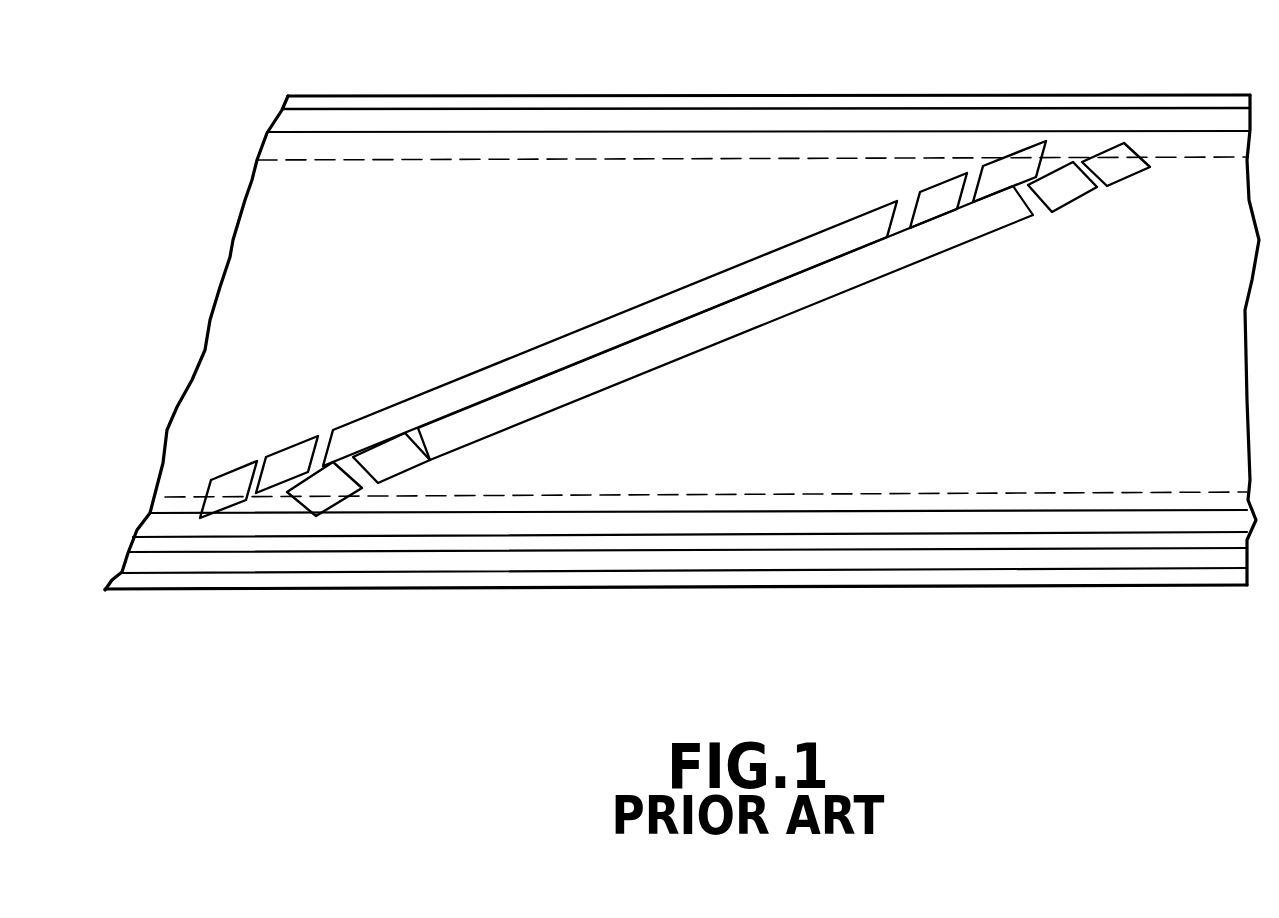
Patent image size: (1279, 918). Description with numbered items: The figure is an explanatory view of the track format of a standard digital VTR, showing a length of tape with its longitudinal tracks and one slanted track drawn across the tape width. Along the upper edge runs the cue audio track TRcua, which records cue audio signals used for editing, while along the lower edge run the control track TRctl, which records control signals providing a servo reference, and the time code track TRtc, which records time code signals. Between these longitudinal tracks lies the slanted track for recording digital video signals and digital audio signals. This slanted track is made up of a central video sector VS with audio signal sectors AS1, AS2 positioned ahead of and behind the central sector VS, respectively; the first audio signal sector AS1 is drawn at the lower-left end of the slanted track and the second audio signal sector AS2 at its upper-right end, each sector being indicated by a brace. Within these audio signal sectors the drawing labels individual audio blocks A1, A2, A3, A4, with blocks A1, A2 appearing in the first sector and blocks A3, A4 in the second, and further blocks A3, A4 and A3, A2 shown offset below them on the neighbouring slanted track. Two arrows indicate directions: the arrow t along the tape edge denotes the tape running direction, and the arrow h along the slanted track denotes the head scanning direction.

The audio sector A1 is at (228, 489).
The audio sector A2 is at (703, 318).
The audio sector A3 is at (692, 339).
The audio sector A4 is at (699, 312).
The video sector VS is at (695, 300).
The audio signal sector AS1 is at (324, 423).
The audio signal sector AS2 is at (898, 196).
The cue audio track TRcua is at (1107, 118).
The time code track TRtc is at (848, 563).
The control track TRctl is at (995, 518).
The tape running direction t is at (777, 58).
The head scanning direction h is at (604, 219).